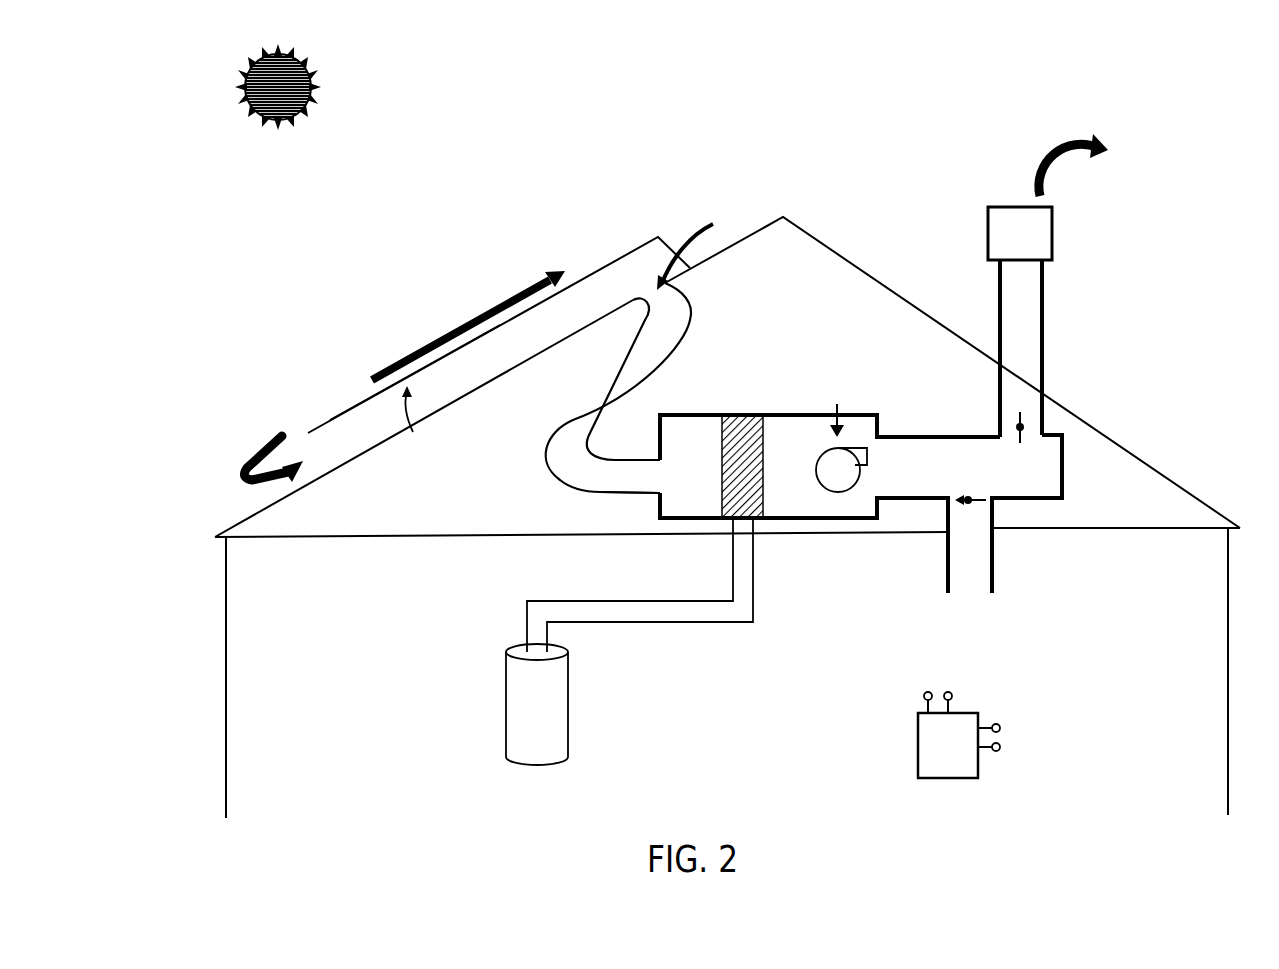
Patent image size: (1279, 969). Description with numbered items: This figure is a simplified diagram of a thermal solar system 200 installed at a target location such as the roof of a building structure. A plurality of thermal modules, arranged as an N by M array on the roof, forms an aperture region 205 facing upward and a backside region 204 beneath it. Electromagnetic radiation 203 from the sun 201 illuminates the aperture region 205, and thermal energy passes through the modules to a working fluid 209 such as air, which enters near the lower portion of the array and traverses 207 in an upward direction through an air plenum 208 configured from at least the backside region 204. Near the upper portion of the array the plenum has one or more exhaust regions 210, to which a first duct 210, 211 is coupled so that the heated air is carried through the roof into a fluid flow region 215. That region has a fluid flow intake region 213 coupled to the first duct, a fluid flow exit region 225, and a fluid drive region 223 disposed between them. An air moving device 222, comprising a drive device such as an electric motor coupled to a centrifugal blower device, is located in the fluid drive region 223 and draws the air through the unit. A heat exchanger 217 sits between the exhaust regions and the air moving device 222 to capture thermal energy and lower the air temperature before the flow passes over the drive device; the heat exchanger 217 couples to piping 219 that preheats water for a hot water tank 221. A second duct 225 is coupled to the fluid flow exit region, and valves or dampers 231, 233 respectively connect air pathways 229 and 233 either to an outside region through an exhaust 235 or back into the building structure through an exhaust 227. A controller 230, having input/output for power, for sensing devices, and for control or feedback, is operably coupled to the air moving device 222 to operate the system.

The thermal solar system 200 is at (929, 212).
The sun 201 is at (314, 83).
The electromagnetic radiation 203 is at (423, 222).
The backside region 204 is at (435, 431).
The aperture region 205 is at (615, 242).
The upward traversal of working fluid 207 is at (522, 290).
The air plenum 208 is at (495, 353).
The working fluid 209 is at (298, 487).
The exhaust region / first duct 210 is at (709, 242).
The duct 211 is at (690, 320).
The fluid flow intake region 213 is at (648, 483).
The fluid flow region 215 is at (812, 347).
The heat exchanger 217 is at (756, 520).
The piping 219 is at (735, 620).
The hot water tank 221 is at (550, 700).
The air moving device 222 is at (830, 481).
The fluid drive region 223 is at (853, 375).
The fluid flow exit region / second duct 225 is at (910, 483).
The exhaust into building structure 227 is at (986, 580).
The air pathway 229 is at (1033, 354).
The controller 230 is at (978, 776).
The valve or damper 231 is at (1030, 432).
The valve or damper 233 is at (992, 497).
The exhaust to outside region 235 is at (1045, 215).